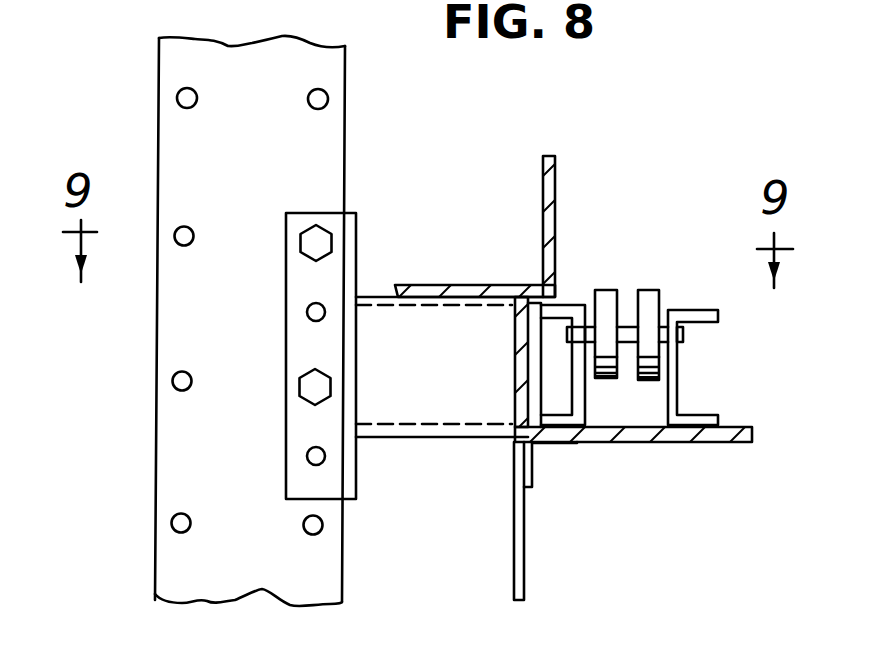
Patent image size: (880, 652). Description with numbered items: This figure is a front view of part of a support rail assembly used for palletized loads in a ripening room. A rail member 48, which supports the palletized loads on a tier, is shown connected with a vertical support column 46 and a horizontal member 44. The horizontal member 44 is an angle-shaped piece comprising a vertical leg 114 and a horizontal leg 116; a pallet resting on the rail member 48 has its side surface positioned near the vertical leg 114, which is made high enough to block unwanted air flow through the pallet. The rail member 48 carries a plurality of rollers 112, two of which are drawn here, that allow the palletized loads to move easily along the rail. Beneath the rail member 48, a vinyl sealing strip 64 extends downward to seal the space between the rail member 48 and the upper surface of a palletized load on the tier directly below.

The horizontal member 44 is at (457, 256).
The vertical support column 46 is at (160, 427).
The rail member 48 is at (698, 310).
The vinyl sealing strip 64 is at (522, 582).
The rollers 112 is at (607, 294).
The vertical leg 114 is at (543, 177).
The horizontal leg 116 is at (477, 287).